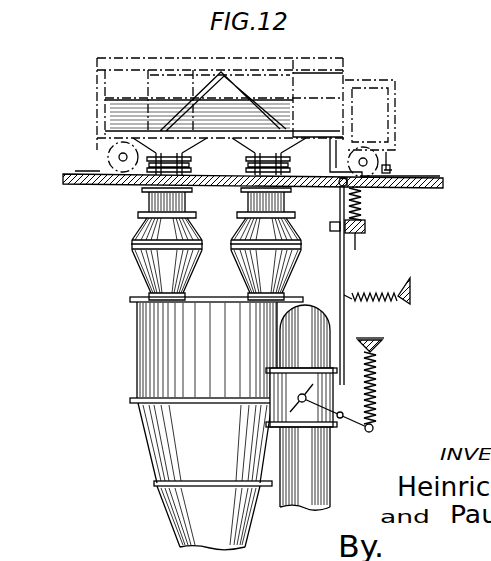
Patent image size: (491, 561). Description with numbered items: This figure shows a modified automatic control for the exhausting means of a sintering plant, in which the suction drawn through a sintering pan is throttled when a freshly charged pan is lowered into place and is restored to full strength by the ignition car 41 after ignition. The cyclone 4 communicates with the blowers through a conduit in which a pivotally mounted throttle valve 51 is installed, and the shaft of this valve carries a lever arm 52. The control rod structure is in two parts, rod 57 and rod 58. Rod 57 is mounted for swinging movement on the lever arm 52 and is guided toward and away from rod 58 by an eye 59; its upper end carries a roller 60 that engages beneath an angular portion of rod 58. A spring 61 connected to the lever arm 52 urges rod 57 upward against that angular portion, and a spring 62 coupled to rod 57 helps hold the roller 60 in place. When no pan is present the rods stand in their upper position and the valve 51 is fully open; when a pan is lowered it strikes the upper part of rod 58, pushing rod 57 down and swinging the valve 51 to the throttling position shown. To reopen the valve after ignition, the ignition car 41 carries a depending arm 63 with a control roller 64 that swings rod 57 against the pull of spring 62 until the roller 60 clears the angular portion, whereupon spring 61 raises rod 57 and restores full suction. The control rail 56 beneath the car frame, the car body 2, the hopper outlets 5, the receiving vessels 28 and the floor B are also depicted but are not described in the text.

The ignition car 41 is at (345, 67).
The car body 2 is at (160, 110).
The hopper outlets 5 is at (250, 158).
The floor / track B is at (436, 180).
The rod 58 is at (330, 163).
The depending arm 63 is at (390, 154).
The control roller 64 is at (391, 169).
The roller 60 is at (340, 187).
The rod 57 is at (345, 258).
The eye 59 is at (366, 226).
The spring 62 is at (367, 302).
The spring 61 is at (377, 370).
The receiving vessels 28 is at (250, 273).
The cyclone 4 is at (152, 455).
The control rail 56 is at (324, 479).
The throttle valve 51 is at (272, 412).
The lever arm 52 is at (365, 432).